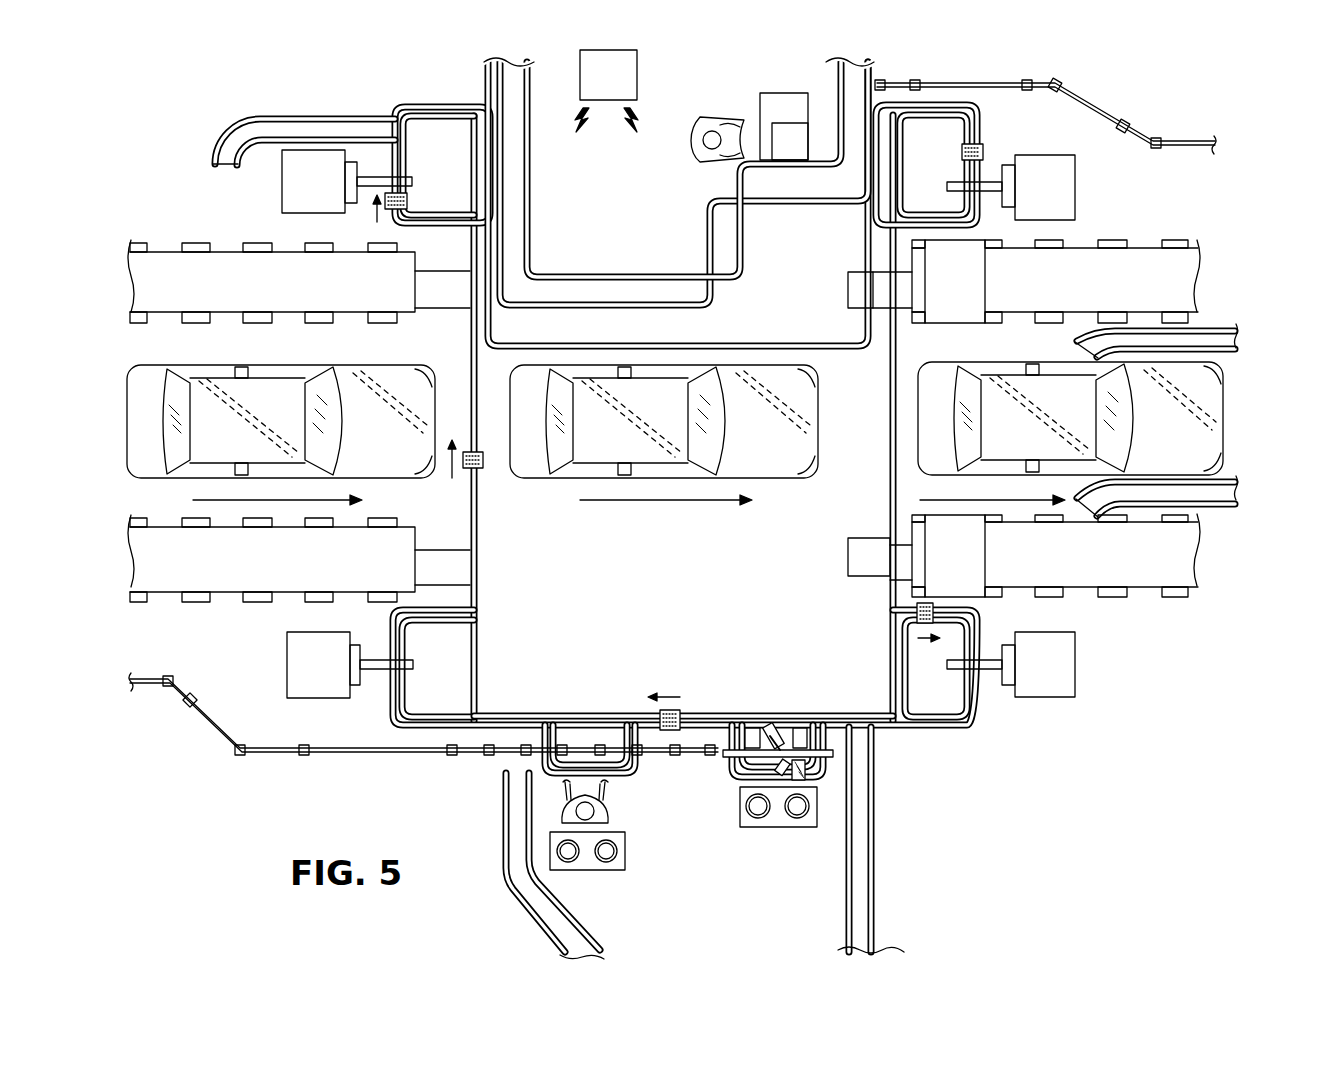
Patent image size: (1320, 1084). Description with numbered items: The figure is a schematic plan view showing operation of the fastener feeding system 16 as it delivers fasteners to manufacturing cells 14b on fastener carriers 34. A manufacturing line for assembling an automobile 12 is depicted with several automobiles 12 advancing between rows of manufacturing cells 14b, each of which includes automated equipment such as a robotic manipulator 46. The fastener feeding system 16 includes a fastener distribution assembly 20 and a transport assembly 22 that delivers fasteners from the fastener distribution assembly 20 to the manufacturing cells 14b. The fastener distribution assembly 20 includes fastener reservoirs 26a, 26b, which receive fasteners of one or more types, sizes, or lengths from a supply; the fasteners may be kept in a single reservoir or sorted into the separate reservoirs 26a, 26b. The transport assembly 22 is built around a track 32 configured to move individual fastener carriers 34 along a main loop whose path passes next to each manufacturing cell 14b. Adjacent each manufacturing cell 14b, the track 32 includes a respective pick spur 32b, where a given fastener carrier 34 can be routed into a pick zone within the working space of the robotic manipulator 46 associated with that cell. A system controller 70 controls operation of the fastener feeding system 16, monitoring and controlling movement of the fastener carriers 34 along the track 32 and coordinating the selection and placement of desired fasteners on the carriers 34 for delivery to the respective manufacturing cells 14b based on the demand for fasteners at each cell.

The automobile 12 is at (1228, 382).
The manufacturing cell 14b is at (182, 121).
The fastener feeding system 16 is at (1187, 102).
The fastener distribution assembly 20 is at (726, 775).
The transport assembly 22 is at (518, 710).
The fastener reservoir 26a is at (744, 812).
The fastener reservoir 26b is at (812, 810).
The track 32 is at (484, 534).
The pick spur 32b is at (418, 106).
The fastener carrier 34 is at (408, 200).
The robotic manipulator 46 is at (283, 184).
The controller 70 is at (630, 98).